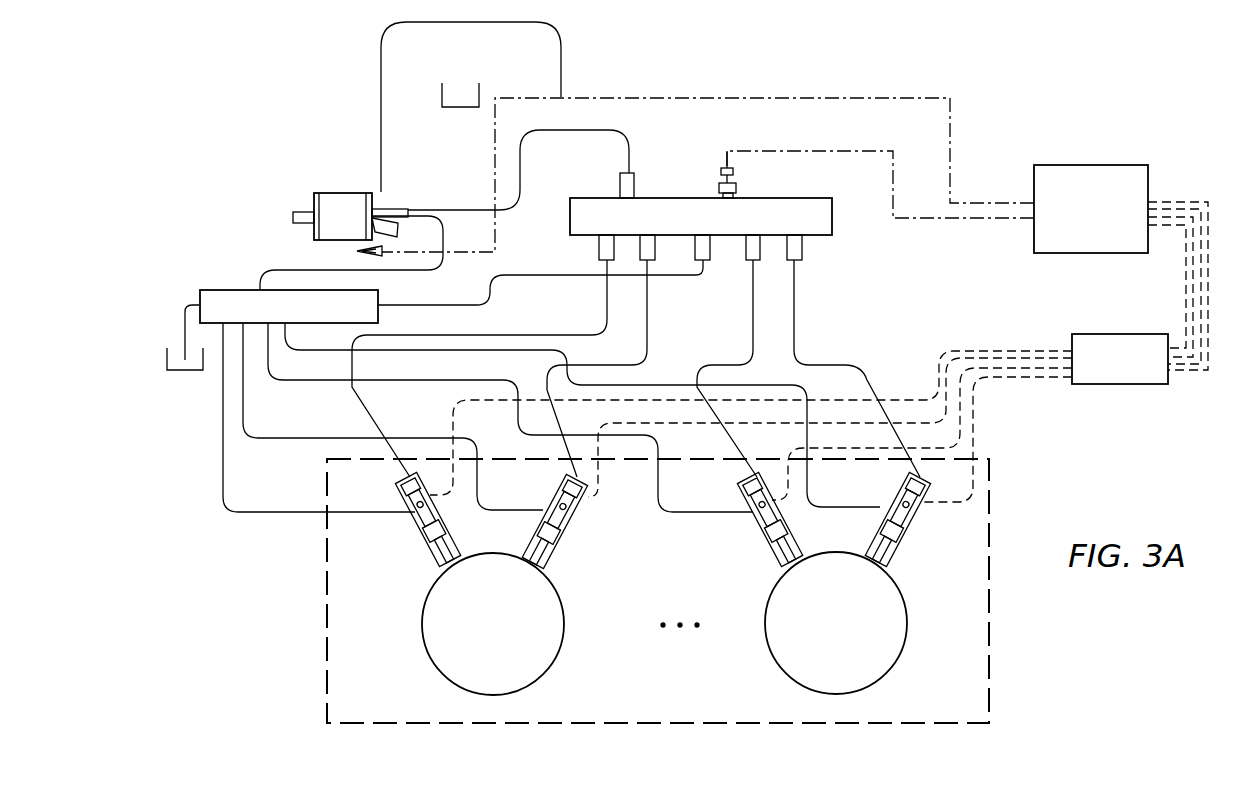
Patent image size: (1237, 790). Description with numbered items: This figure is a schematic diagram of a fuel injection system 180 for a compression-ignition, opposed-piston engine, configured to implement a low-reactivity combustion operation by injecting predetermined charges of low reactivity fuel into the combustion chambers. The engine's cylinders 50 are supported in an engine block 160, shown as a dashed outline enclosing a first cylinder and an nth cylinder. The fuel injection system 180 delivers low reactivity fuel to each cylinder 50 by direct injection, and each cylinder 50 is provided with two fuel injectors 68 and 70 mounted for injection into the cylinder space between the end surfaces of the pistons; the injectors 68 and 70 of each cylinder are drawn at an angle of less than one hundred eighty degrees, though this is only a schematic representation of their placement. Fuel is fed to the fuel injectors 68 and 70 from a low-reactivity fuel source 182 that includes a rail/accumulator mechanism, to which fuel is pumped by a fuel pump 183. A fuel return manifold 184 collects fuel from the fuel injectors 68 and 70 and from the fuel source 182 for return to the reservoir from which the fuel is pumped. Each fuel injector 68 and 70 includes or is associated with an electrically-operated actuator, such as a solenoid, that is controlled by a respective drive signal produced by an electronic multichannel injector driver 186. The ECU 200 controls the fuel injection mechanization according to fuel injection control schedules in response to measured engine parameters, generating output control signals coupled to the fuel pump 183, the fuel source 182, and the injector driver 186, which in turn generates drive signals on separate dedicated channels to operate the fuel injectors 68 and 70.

The fuel injection system 180 is at (923, 50).
The fuel pump 183 is at (346, 193).
The low-reactivity fuel source 182 is at (780, 198).
The fuel return manifold 184 is at (378, 305).
The ECU 200 is at (1084, 165).
The electronic multichannel injector driver 186 is at (1098, 384).
The engine block 160 is at (990, 668).
The cylinder 50 is at (565, 613).
The fuel injector 68 is at (433, 545).
The fuel injector 70 is at (558, 532).